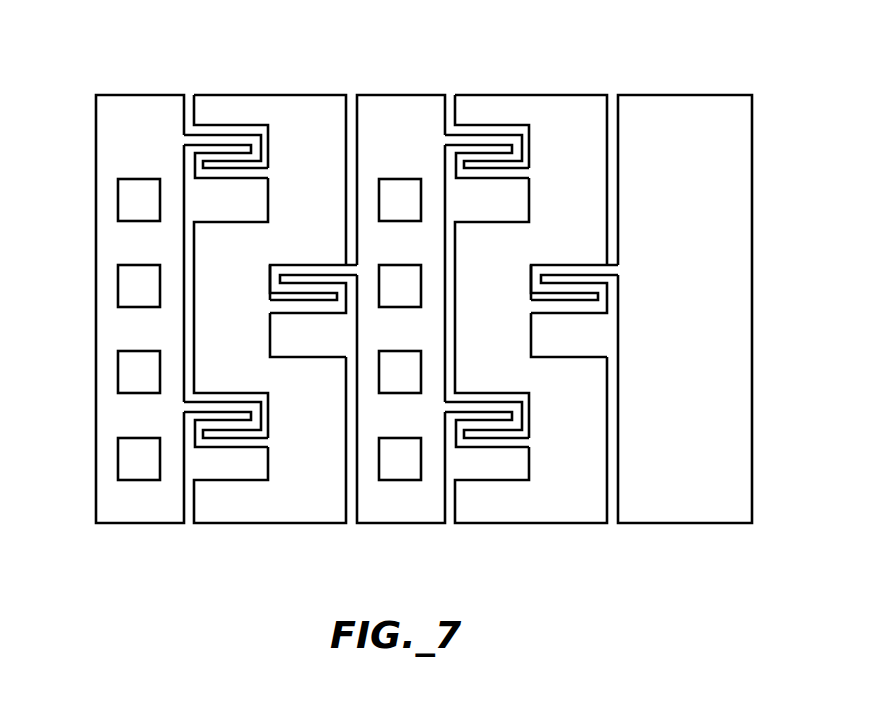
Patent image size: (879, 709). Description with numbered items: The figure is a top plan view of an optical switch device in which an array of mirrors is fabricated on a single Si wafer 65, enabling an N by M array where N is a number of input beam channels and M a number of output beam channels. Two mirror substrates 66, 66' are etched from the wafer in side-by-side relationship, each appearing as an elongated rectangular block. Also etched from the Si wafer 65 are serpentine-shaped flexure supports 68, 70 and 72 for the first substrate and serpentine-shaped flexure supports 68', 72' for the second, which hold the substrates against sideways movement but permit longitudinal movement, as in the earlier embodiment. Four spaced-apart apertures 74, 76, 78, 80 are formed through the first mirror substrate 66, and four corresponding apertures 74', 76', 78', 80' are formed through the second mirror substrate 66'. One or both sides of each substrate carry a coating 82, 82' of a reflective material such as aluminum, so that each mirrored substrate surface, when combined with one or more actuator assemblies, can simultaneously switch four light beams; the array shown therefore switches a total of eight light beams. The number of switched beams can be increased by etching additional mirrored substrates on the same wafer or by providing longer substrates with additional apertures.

The Si wafer 65 is at (293, 91).
The mirror substrate 66 is at (121, 288).
The serpentine-shaped flexure support 68 is at (237, 115).
The serpentine-shaped flexure support 70 is at (335, 273).
The serpentine-shaped flexure support 72 is at (245, 487).
The aperture 74 is at (104, 200).
The aperture 76 is at (104, 286).
The aperture 78 is at (104, 372).
The aperture 80 is at (104, 459).
The coating of reflective material 82 is at (116, 309).
The mirror substrate 66' is at (409, 273).
The serpentine-shaped flexure support 68' is at (506, 115).
The serpentine-shaped flexure support 72' is at (515, 486).
The aperture 74' is at (486, 200).
The aperture 76' is at (447, 276).
The aperture 78' is at (447, 363).
The aperture 80' is at (435, 504).
The coating of reflective material 82' is at (404, 273).